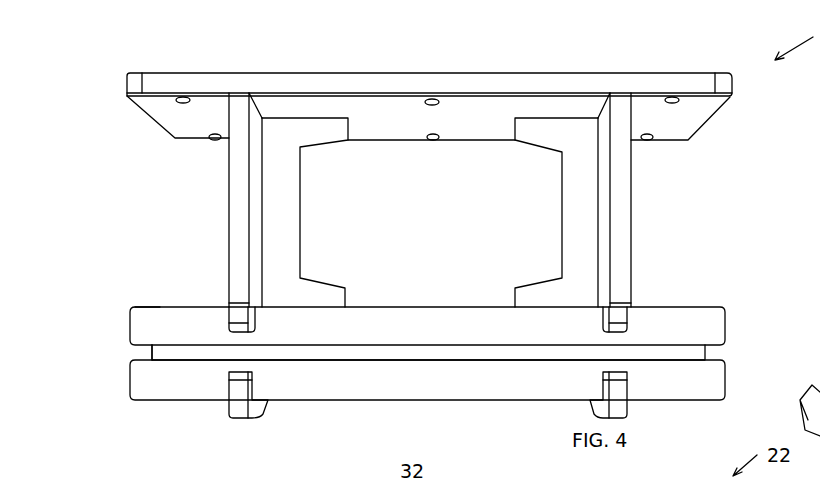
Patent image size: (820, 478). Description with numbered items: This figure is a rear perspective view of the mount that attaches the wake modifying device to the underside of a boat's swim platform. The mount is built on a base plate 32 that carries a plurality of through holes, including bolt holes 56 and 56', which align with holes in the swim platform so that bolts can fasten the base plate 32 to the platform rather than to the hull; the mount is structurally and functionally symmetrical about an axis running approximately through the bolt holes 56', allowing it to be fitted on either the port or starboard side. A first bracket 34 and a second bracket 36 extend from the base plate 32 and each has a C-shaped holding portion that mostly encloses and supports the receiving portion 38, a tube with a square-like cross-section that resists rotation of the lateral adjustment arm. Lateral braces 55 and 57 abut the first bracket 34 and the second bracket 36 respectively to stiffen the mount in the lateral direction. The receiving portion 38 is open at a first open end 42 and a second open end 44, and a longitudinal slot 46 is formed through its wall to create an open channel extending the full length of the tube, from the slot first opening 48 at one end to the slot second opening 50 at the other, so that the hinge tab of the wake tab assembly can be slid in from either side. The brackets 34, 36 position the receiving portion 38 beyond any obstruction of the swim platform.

The base plate 32 is at (452, 78).
The first bracket 34 is at (232, 228).
The second bracket 36 is at (630, 232).
The receiving portion 38 is at (462, 392).
The first open end 42 is at (723, 323).
The second open end 44 is at (132, 310).
The longitudinal slot 46 is at (368, 348).
The slot first opening 48 is at (706, 352).
The slot second opening 50 is at (127, 353).
The lateral brace 55 is at (300, 205).
The bolt hole 56 is at (418, 116).
The bolt hole 56' is at (405, 72).
The lateral brace 57 is at (562, 205).